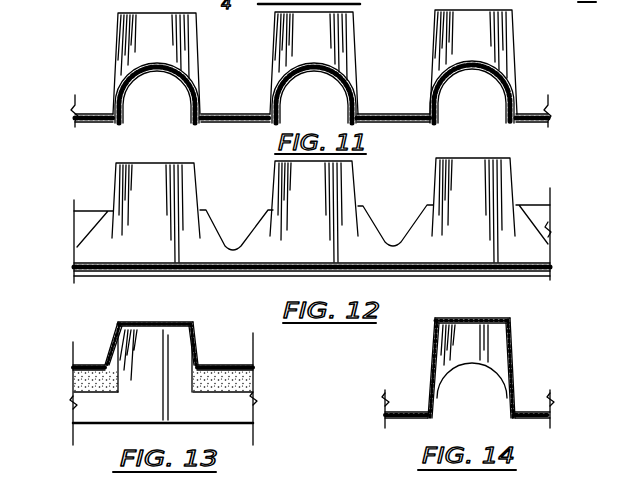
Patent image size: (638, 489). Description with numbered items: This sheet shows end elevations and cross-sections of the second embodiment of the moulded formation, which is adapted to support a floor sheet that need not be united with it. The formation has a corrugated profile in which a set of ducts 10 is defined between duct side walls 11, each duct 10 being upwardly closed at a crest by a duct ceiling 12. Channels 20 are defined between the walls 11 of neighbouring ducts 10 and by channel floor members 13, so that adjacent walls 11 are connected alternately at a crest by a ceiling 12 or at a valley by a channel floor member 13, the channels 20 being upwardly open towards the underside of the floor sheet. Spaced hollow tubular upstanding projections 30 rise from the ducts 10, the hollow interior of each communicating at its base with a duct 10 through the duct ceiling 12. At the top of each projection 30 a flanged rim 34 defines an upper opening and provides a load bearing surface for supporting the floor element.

In FIG. 11, the duct 10 is at (461, 103).
In FIG. 11, the duct side wall 11 is at (142, 106).
In FIG. 12, the duct side wall 11 is at (397, 240).
In FIG. 13, the duct side wall 11 is at (232, 408).
In FIG. 14, the duct side wall 11 is at (437, 396).
In FIG. 11, the duct ceiling 12 is at (309, 79).
In FIG. 12, the duct ceiling 12 is at (229, 210).
In FIG. 13, the duct ceiling 12 is at (243, 358).
In FIG. 14, the duct ceiling 12 is at (487, 368).
In FIG. 11, the channel floor member 13 is at (244, 124).
In FIG. 12, the channel floor member 13 is at (98, 263).
In FIG. 11, the channel 20 is at (229, 97).
In FIG. 11, the hollow tubular upstanding projection 30 is at (118, 47).
In FIG. 12, the hollow tubular upstanding projection 30 is at (347, 188).
In FIG. 13, the hollow tubular upstanding projection 30 is at (117, 340).
In FIG. 14, the hollow tubular upstanding projection 30 is at (512, 352).
In FIG. 13, the flanged rim 34 is at (187, 323).
In FIG. 14, the flanged rim 34 is at (506, 320).